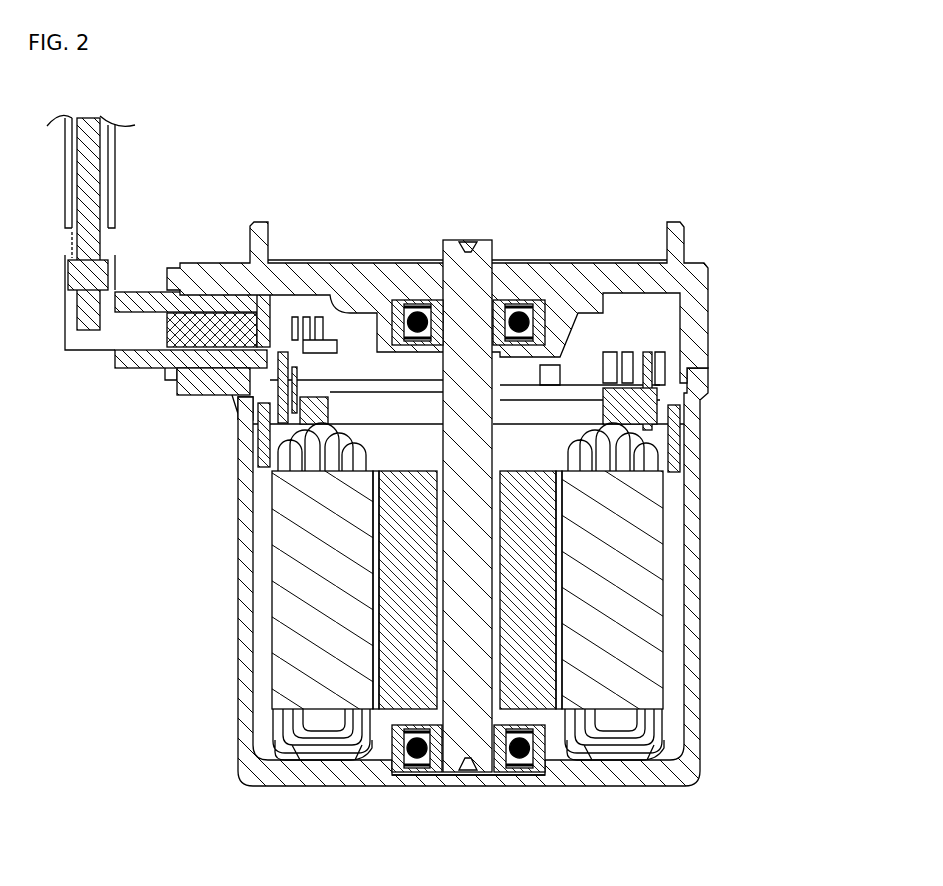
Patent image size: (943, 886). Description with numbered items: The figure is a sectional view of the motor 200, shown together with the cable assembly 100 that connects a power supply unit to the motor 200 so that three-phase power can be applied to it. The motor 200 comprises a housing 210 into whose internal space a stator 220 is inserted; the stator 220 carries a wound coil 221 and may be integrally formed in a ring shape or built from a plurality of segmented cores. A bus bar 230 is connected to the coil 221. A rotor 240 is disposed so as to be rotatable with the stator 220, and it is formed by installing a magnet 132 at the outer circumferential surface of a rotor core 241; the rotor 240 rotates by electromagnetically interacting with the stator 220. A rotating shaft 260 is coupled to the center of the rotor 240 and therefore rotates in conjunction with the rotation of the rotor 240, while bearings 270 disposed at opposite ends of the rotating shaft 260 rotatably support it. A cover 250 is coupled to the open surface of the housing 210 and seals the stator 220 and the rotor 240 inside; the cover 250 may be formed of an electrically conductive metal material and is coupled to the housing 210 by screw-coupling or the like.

The cable assembly 100 is at (78, 366).
The motor 200 is at (495, 499).
The housing 210 is at (690, 692).
The stator 220 is at (647, 488).
The coil 221 is at (657, 457).
The bus bar 230 is at (643, 358).
The rotor 240 is at (598, 590).
The rotor core 241 is at (528, 537).
The magnet 132 is at (558, 580).
The cover 250 is at (697, 306).
The rotating shaft 260 is at (458, 632).
The bearings 270 is at (540, 300).